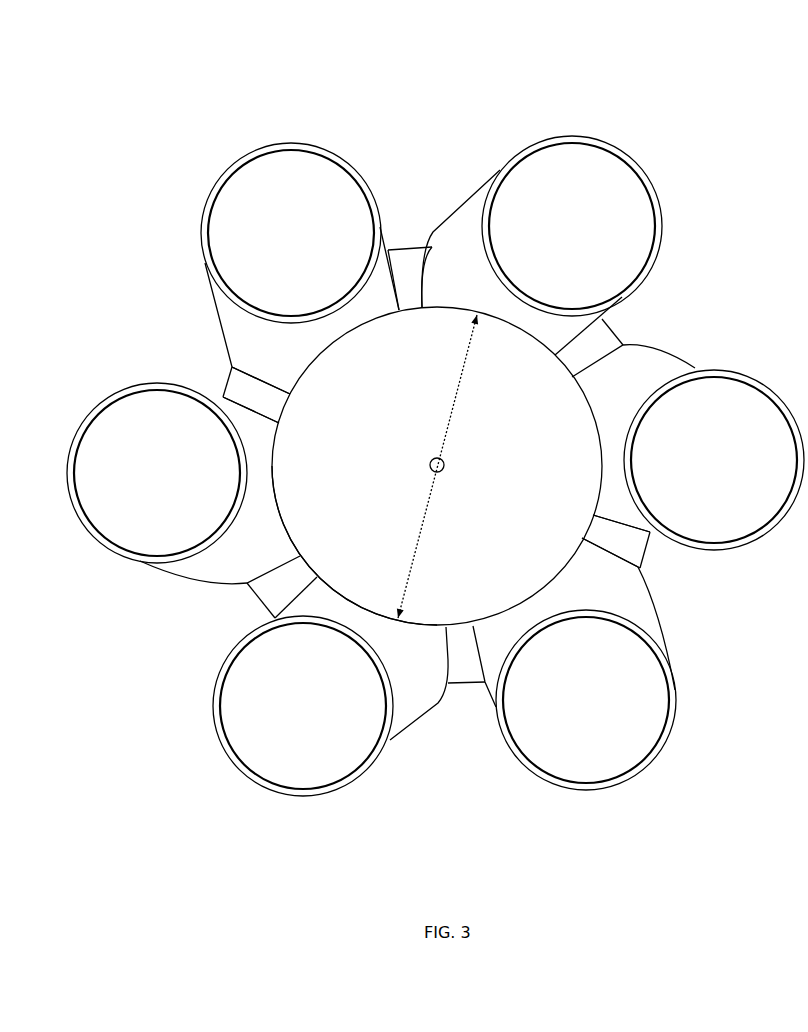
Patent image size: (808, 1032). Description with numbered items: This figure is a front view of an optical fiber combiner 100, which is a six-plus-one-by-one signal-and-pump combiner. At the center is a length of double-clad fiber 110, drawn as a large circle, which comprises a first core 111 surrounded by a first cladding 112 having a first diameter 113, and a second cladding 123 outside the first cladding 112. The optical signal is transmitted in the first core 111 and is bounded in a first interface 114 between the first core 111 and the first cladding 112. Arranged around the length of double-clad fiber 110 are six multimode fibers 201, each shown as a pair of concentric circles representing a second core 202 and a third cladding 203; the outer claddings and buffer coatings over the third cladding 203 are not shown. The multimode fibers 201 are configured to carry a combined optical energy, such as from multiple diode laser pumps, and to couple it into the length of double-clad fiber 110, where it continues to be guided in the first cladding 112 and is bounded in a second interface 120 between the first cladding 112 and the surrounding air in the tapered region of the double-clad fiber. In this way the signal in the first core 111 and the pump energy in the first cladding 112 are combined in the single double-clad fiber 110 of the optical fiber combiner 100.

The optical fiber combiner 100 is at (482, 163).
The length of double-clad fiber 110 is at (540, 405).
The first core 111 is at (432, 457).
The first cladding 112 is at (323, 427).
The first diameter 113 is at (428, 513).
The first interface 114 is at (432, 475).
The second interface 120 is at (412, 307).
The second cladding 123 is at (632, 545).
The multimode fibers 201 is at (462, 222).
The second core 202 is at (287, 198).
The third cladding 203 is at (215, 178).